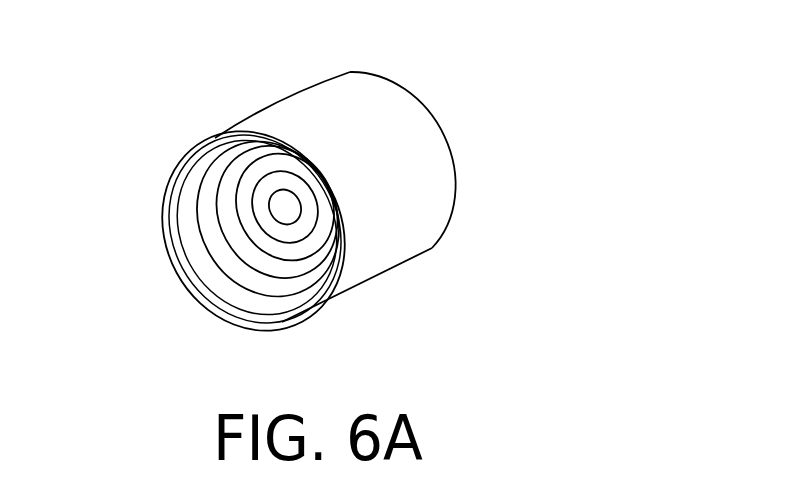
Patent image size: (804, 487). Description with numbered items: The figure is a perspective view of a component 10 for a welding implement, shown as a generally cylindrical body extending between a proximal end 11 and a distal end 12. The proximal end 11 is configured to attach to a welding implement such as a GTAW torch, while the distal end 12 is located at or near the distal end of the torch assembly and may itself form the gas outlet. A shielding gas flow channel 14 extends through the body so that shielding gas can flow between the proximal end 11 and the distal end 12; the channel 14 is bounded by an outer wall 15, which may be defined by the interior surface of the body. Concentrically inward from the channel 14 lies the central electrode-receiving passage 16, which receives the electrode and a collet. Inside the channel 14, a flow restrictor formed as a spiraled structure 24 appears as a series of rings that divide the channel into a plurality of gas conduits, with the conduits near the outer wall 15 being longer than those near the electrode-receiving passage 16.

The component 10 is at (130, 54).
The proximal end 11 is at (427, 115).
The distal end 12 is at (197, 300).
The shielding gas flow channel 14 is at (297, 294).
The outer wall 15 is at (303, 115).
The central electrode-receiving passage 16 is at (283, 205).
The spiraled structure 24 is at (218, 226).